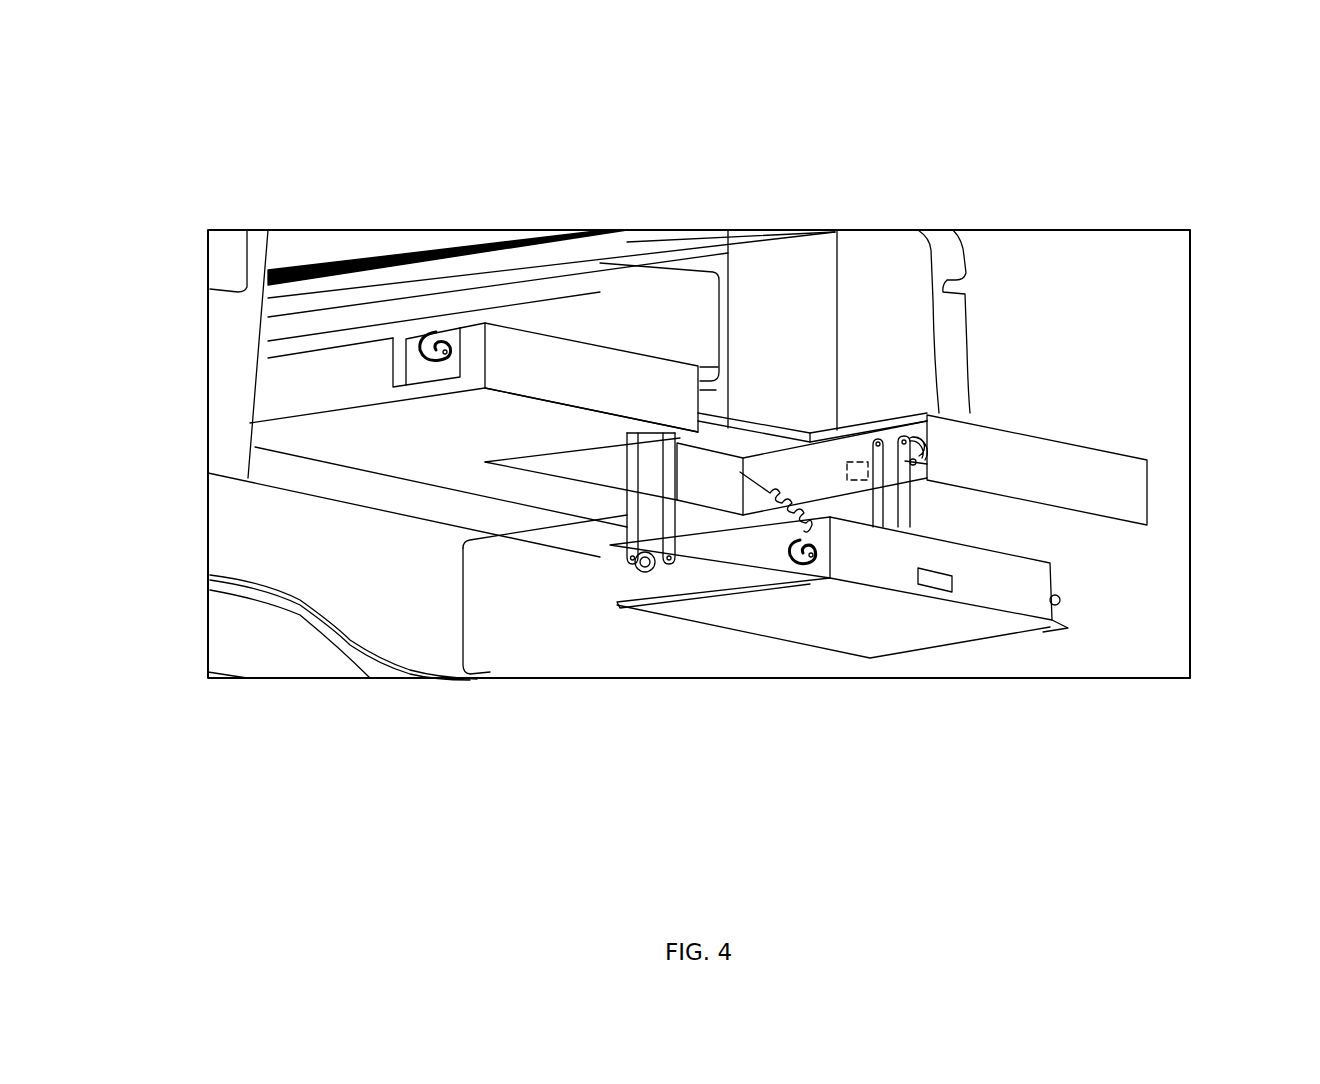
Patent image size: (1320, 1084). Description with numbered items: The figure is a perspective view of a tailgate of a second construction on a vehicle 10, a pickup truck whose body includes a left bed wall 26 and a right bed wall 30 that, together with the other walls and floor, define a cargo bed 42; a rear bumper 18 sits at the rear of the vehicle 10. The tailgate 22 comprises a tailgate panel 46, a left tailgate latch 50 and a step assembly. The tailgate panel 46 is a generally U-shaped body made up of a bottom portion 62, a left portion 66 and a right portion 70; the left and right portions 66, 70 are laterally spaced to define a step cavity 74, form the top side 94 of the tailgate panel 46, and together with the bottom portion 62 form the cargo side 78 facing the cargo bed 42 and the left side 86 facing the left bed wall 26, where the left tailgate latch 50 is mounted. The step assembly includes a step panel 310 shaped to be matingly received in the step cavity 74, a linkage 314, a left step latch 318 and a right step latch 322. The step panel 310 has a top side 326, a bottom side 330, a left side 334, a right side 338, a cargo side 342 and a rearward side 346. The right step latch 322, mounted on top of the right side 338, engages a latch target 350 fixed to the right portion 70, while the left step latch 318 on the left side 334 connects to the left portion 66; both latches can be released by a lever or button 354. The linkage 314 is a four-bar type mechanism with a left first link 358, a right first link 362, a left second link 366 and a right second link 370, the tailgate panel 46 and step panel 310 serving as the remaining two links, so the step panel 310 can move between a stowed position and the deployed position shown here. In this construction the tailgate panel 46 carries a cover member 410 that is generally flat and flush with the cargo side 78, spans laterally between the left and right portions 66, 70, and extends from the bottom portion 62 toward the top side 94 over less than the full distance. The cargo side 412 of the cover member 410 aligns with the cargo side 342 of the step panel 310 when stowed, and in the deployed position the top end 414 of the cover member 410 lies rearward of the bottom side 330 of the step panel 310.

The vehicle 10 is at (505, 100).
The rear bumper 18 is at (243, 565).
The tailgate 22 is at (420, 465).
The left bed wall 26 is at (228, 308).
The right bed wall 30 is at (746, 270).
The cargo bed 42 is at (337, 317).
The tailgate panel 46 is at (270, 370).
The left tailgate latch 50 is at (438, 330).
The bottom portion 62 is at (206, 660).
The left portion 66 is at (485, 388).
The right portion 70 is at (1023, 530).
The step cavity 74 is at (472, 470).
The cargo side 78 is at (597, 340).
The left side 86 is at (293, 408).
The top side 94 is at (508, 350).
The step panel 310 is at (1025, 600).
The linkage 314 is at (917, 500).
The left step latch 318 is at (793, 567).
The right step latch 322 is at (1053, 600).
The top side 326 is at (866, 565).
The bottom side 330 is at (630, 508).
The left side 334 is at (720, 557).
The right side 338 is at (1053, 555).
The cargo side 342 is at (1053, 578).
The rearward side 346 is at (880, 625).
The latch target 350 is at (927, 415).
The lever or button 354 is at (937, 580).
The left first link 358 is at (603, 472).
The right first link 362 is at (887, 437).
The left second link 366 is at (643, 567).
The right second link 370 is at (903, 437).
The cover member 410 is at (730, 427).
The cargo side 412 is at (797, 427).
The top end 414 is at (758, 428).